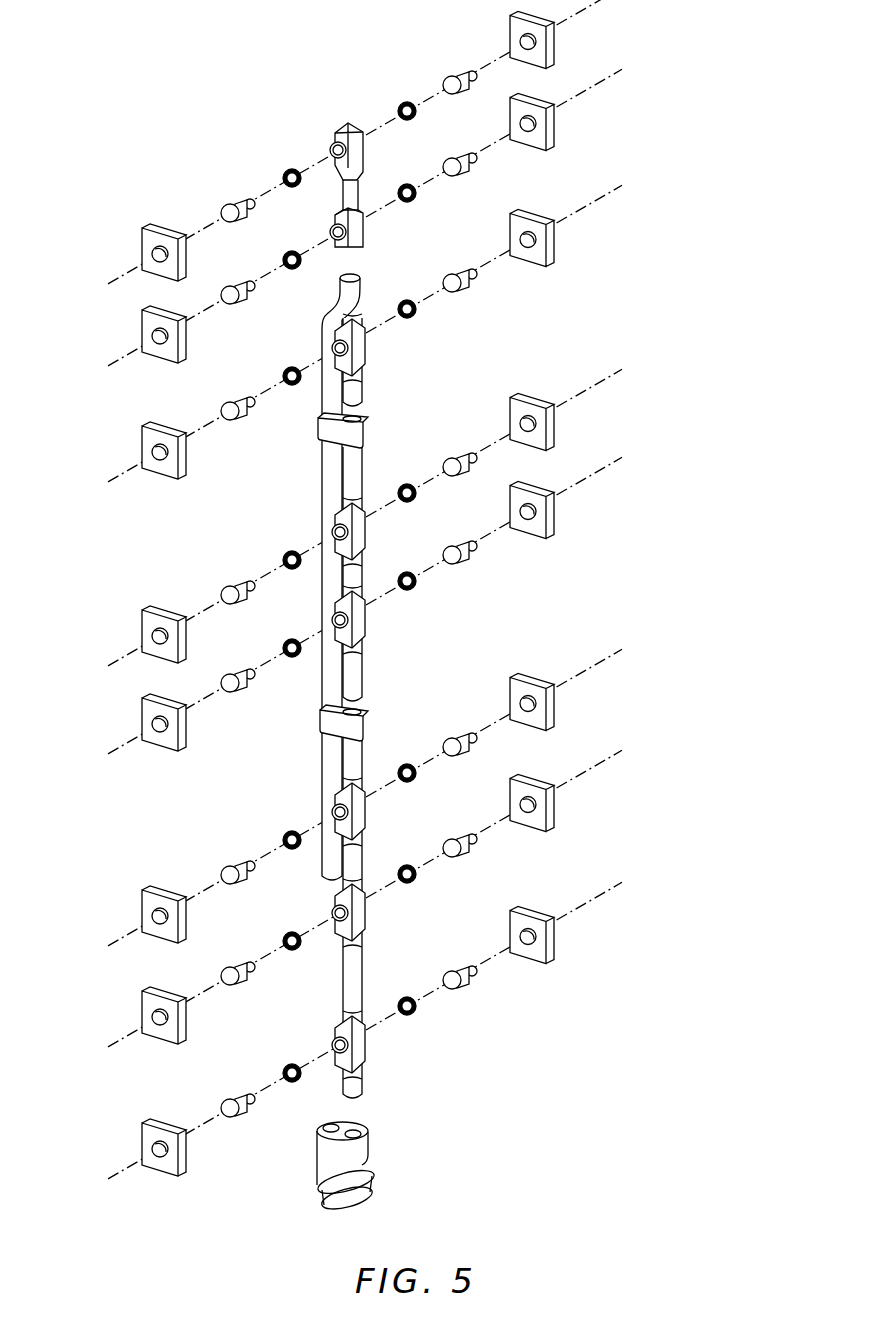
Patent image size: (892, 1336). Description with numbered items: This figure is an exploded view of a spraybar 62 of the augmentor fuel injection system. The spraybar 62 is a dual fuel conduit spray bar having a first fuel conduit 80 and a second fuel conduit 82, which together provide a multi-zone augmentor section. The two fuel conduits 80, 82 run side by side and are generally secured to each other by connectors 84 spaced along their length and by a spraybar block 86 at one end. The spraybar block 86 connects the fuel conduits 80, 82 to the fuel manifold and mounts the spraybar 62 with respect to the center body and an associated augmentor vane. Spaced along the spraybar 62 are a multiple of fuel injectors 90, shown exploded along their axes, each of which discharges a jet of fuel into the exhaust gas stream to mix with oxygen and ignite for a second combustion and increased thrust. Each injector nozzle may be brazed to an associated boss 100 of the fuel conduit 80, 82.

The spraybar 62 is at (665, 3).
The first fuel conduit 80 is at (428, 706).
The second fuel conduit 82 is at (348, 757).
The connector 84 is at (360, 712).
The spraybar block 86 is at (402, 1160).
The fuel injector 90 is at (438, 410).
The boss 100 is at (360, 538).